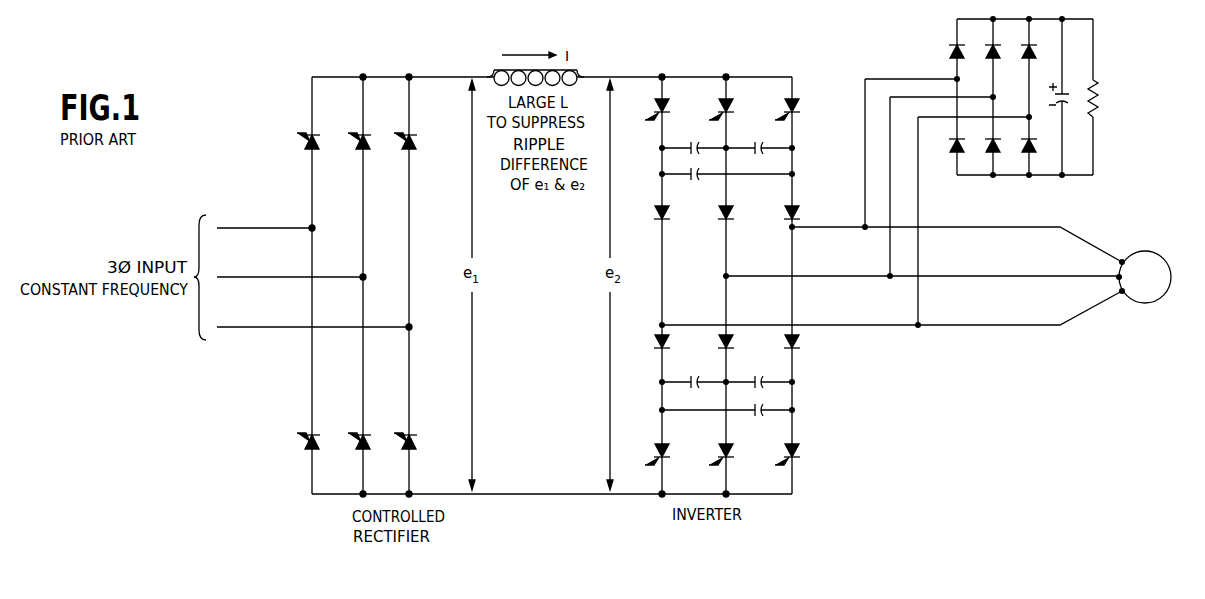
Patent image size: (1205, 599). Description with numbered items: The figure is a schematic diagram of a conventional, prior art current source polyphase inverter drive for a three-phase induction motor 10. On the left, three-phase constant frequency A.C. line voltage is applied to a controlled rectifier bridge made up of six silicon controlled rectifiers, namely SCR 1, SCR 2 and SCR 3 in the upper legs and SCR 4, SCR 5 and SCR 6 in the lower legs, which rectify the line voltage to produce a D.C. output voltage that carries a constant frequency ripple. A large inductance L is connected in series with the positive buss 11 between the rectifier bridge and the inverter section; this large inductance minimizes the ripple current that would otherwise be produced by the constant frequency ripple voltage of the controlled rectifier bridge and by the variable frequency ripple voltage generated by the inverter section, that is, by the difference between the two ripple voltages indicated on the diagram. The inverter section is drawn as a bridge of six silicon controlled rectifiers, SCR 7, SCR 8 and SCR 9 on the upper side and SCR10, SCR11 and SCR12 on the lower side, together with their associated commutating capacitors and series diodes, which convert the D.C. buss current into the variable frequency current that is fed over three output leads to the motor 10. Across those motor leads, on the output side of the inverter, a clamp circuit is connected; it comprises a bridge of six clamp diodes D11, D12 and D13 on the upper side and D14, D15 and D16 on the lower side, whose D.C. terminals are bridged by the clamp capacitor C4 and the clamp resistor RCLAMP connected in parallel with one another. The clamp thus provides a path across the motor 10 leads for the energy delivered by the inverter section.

The three-phase induction motor 10 is at (1165, 261).
The positive buss 11 is at (482, 75).
The controlled rectifier SCR1 1 is at (297, 150).
The controlled rectifier SCR2 2 is at (348, 150).
The controlled rectifier SCR3 3 is at (395, 150).
The controlled rectifier SCR4 4 is at (298, 426).
The controlled rectifier SCR5 5 is at (349, 426).
The controlled rectifier SCR6 6 is at (395, 426).
The inverter SCR7 7 is at (656, 98).
The inverter SCR8 8 is at (720, 98).
The inverter SCR9 9 is at (786, 98).
The inverter SCR10 is at (642, 452).
The inverter SCR11 is at (707, 452).
The inverter SCR12 is at (772, 452).
The clamp diode D11 is at (949, 45).
The clamp diode D12 is at (983, 45).
The clamp diode D13 is at (1020, 45).
The clamp diode D14 is at (953, 155).
The clamp diode D15 is at (989, 155).
The clamp diode D16 is at (1025, 155).
The clamp capacitor C4 is at (1064, 103).
The clamp resistor RCLAMP is at (1124, 98).